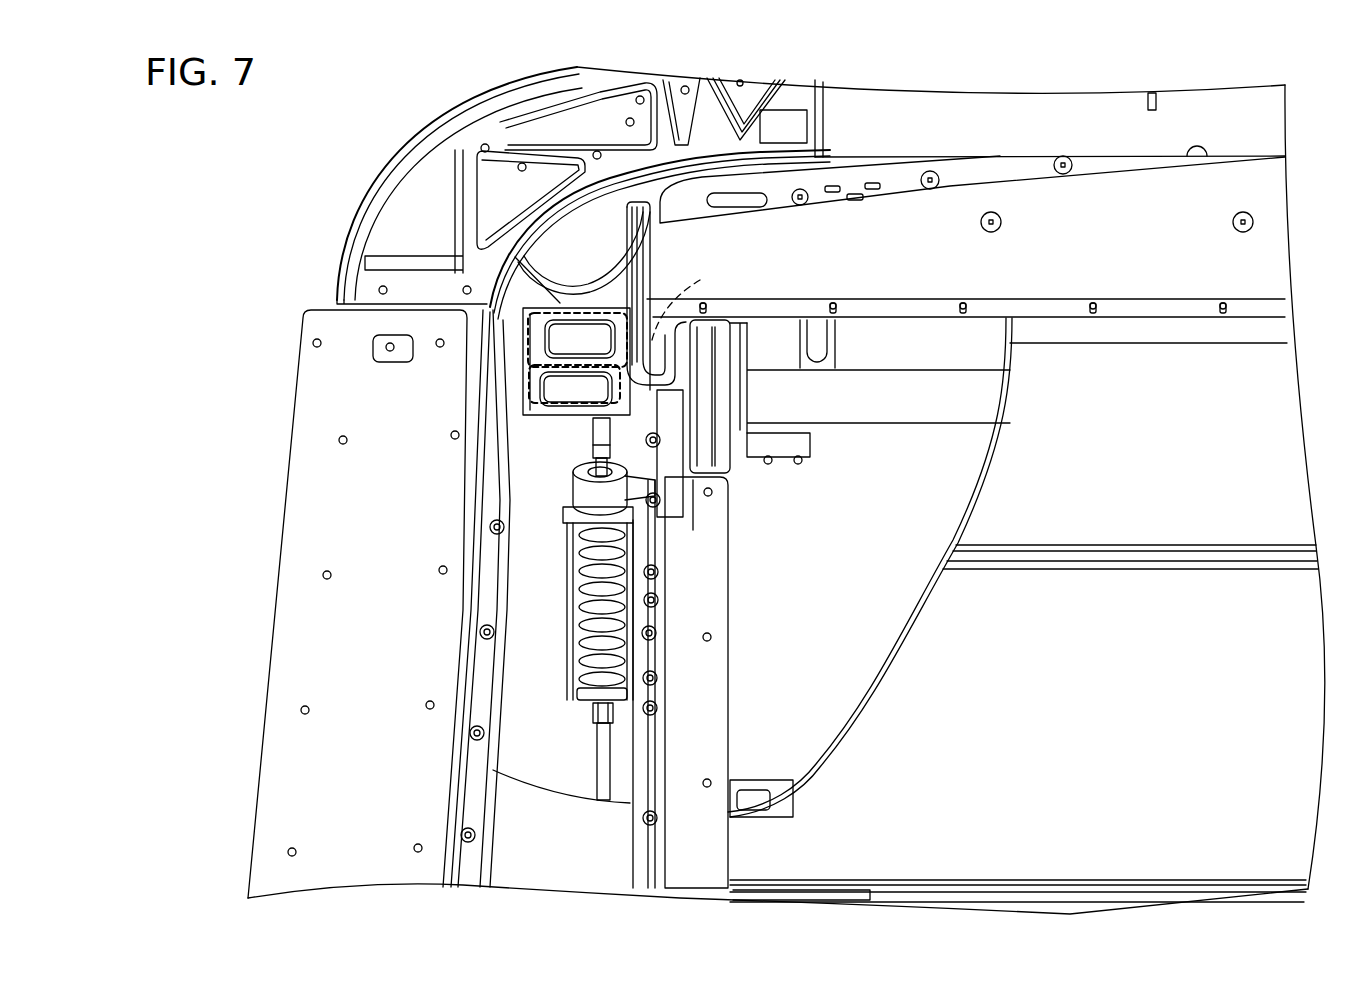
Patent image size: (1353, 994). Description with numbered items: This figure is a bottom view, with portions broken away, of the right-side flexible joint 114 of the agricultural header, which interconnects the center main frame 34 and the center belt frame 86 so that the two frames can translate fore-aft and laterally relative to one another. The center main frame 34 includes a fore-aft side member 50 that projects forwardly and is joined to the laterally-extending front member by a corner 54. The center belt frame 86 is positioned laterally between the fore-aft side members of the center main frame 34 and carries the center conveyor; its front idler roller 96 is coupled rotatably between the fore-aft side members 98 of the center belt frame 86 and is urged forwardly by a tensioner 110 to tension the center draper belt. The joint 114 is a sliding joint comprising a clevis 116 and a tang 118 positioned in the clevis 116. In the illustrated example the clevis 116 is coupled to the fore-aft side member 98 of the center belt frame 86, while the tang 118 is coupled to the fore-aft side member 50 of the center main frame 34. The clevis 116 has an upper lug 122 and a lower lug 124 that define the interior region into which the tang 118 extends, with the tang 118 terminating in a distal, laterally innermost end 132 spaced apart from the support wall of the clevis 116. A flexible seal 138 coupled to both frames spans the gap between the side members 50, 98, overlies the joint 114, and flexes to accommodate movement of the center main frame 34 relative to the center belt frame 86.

The center main frame 34 is at (263, 243).
The fore-aft side member 50 is at (308, 598).
The corner 54 is at (415, 143).
The center belt frame 86 is at (1055, 462).
The front idler roller 96 is at (887, 330).
The fore-aft side member 98 is at (707, 593).
The tensioner 110 is at (557, 682).
The flexible joint 114 is at (552, 262).
The clevis 116 is at (535, 425).
The tang 118 is at (526, 393).
The upper lug 122 is at (583, 283).
The lower lug 124 is at (647, 285).
The laterally innermost end 132 is at (702, 299).
The flexible seal 138 is at (517, 830).